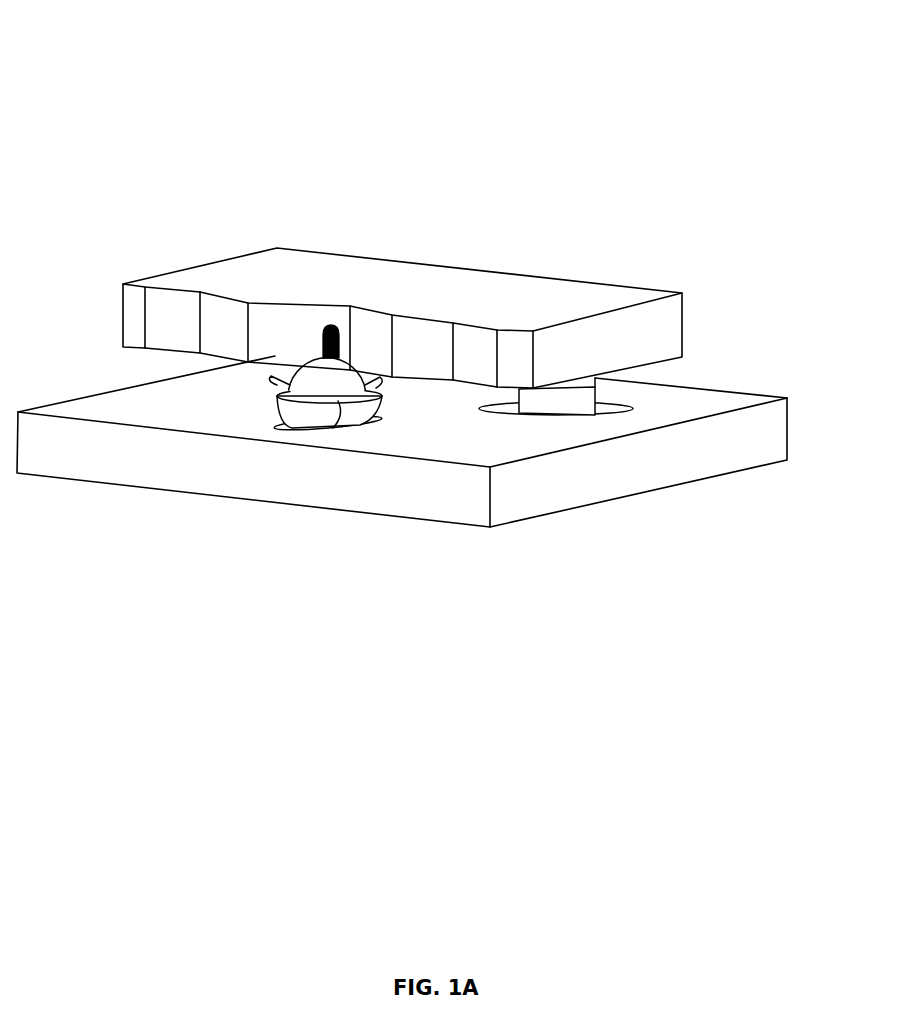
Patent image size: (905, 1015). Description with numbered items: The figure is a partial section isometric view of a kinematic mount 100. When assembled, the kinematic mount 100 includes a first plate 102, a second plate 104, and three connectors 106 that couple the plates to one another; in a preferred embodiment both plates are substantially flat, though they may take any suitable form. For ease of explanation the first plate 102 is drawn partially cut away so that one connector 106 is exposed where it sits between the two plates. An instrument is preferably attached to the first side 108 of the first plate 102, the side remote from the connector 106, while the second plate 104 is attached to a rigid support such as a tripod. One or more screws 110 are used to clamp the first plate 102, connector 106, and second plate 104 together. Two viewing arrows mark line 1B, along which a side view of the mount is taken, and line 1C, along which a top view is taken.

The kinematic mount 100 is at (483, 118).
The first plate 102 is at (620, 340).
The second plate 104 is at (347, 492).
The connector 106 is at (248, 407).
The first side 108 is at (538, 303).
The screw 110 is at (330, 325).
The line 1B is at (174, 476).
The line 1C is at (373, 257).